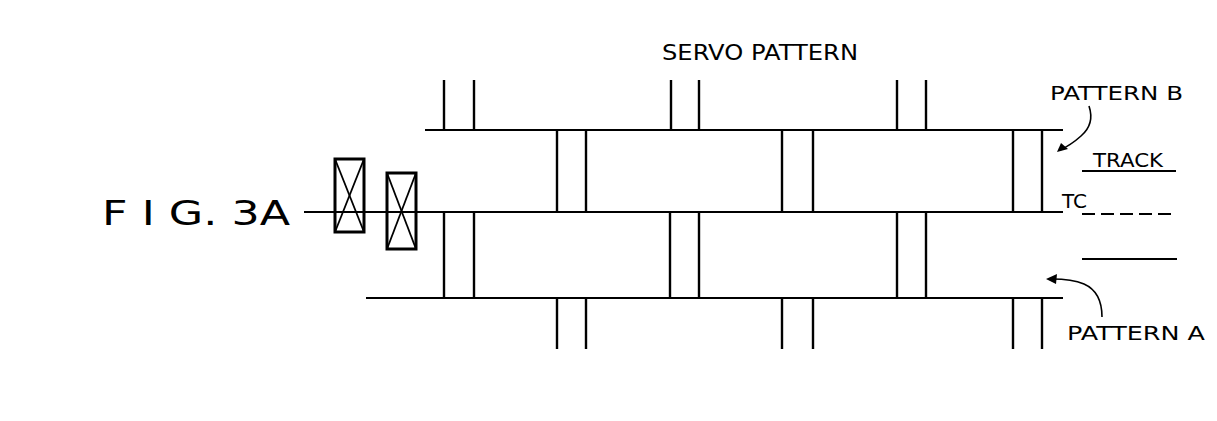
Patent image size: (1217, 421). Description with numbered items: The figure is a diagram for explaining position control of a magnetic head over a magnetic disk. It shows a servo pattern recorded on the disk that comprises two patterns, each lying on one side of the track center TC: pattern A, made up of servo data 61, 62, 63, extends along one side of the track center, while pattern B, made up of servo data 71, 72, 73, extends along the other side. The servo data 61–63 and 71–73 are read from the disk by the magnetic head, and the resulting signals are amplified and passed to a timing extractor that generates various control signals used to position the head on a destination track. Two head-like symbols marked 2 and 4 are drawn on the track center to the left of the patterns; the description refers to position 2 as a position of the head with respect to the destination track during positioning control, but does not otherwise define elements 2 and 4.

The read head 2 is at (345, 233).
The write head 4 is at (402, 250).
The servo data 61 is at (474, 270).
The servo data 62 is at (699, 268).
The servo data 63 is at (926, 267).
The servo data 71 is at (586, 183).
The servo data 72 is at (813, 183).
The servo data 73 is at (1013, 183).